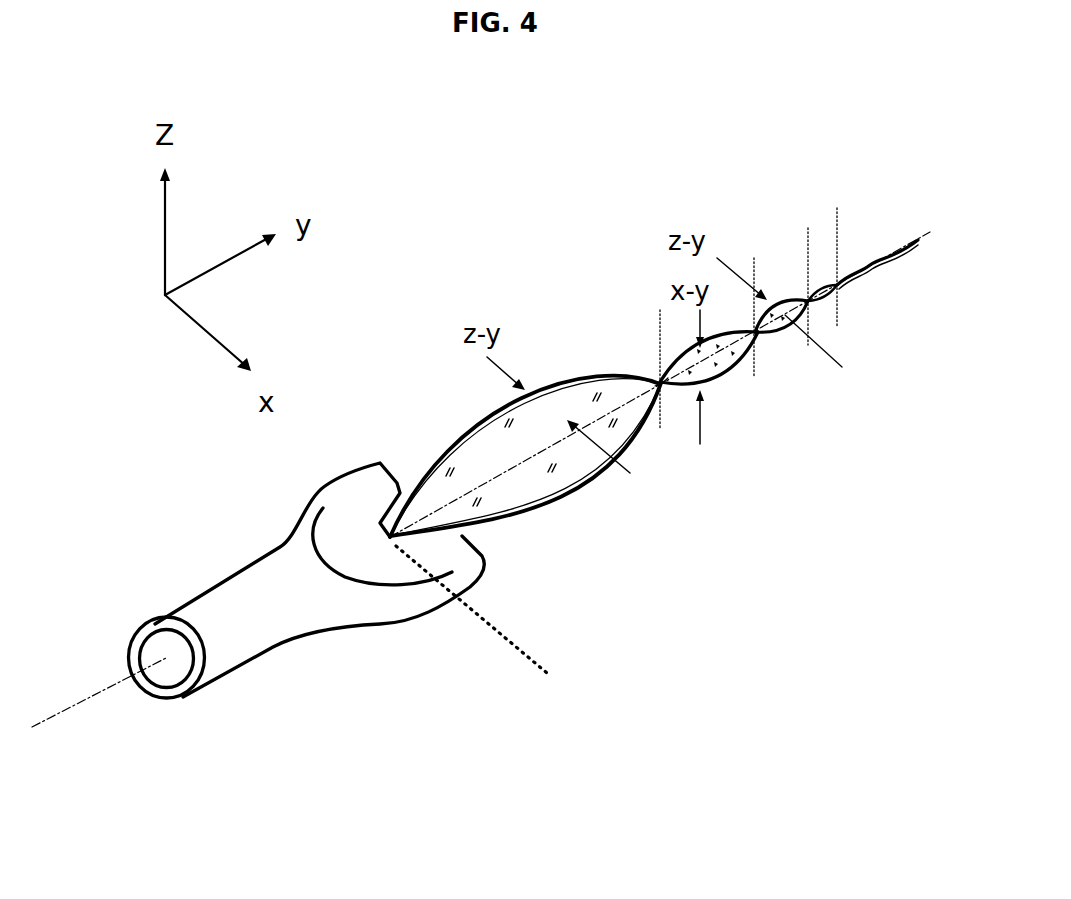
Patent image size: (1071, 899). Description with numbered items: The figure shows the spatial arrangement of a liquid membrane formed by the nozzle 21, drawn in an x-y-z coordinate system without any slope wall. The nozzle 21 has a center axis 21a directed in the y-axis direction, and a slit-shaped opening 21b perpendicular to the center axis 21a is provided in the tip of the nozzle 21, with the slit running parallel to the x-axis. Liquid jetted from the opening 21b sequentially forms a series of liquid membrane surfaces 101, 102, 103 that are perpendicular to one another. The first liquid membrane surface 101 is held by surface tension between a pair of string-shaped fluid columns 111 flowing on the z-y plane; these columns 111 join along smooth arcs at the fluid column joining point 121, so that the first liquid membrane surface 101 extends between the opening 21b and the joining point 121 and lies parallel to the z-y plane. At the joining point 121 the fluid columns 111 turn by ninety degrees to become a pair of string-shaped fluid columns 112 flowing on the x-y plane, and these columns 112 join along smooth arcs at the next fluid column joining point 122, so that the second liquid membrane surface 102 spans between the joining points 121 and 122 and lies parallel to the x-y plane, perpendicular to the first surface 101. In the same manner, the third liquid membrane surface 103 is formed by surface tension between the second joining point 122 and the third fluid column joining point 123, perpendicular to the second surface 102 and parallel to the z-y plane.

The nozzle 21 is at (252, 640).
The center axis 21a is at (120, 705).
The slit-shaped opening 21b is at (390, 540).
The first liquid membrane surface 101 is at (510, 490).
The second liquid membrane surface 102 is at (717, 362).
The third liquid membrane surface 103 is at (798, 300).
The string-shaped fluid columns 111 is at (480, 413).
The string-shaped fluid columns 112 is at (670, 362).
The fluid column joining point 121 is at (660, 382).
The fluid column joining point 122 is at (767, 372).
The fluid column joining point 123 is at (810, 303).